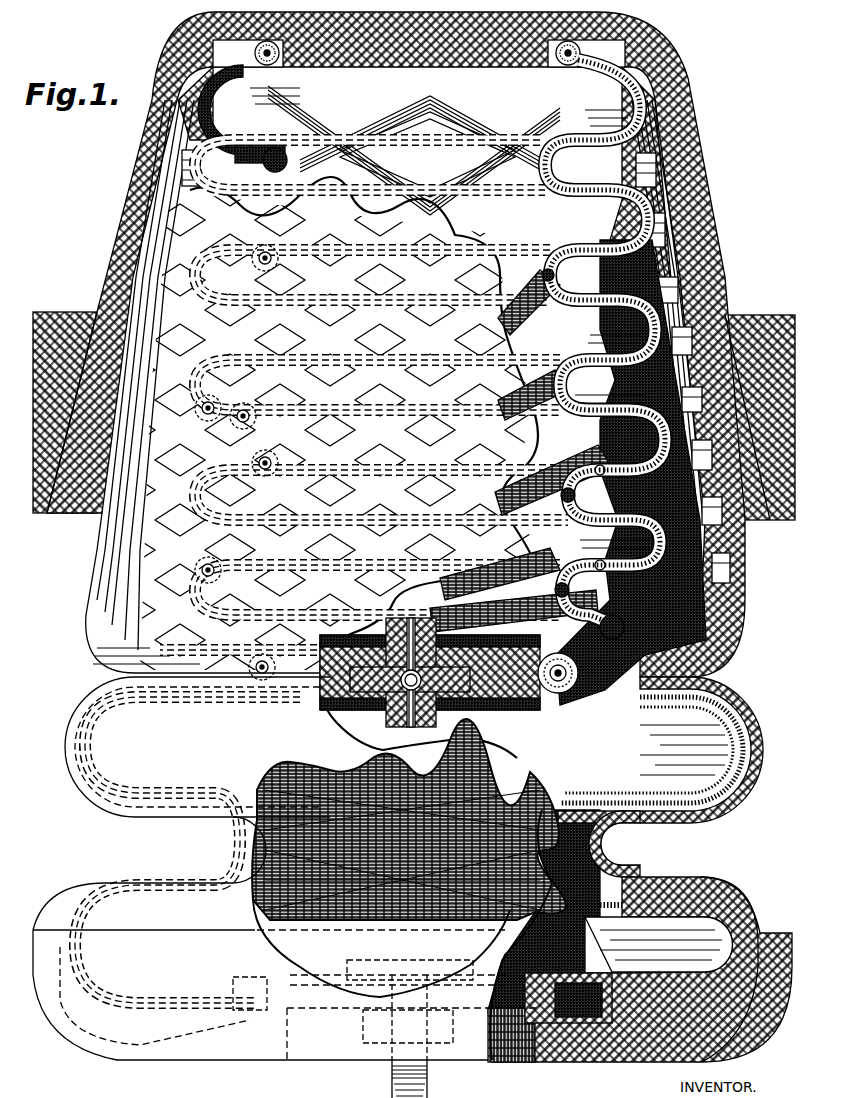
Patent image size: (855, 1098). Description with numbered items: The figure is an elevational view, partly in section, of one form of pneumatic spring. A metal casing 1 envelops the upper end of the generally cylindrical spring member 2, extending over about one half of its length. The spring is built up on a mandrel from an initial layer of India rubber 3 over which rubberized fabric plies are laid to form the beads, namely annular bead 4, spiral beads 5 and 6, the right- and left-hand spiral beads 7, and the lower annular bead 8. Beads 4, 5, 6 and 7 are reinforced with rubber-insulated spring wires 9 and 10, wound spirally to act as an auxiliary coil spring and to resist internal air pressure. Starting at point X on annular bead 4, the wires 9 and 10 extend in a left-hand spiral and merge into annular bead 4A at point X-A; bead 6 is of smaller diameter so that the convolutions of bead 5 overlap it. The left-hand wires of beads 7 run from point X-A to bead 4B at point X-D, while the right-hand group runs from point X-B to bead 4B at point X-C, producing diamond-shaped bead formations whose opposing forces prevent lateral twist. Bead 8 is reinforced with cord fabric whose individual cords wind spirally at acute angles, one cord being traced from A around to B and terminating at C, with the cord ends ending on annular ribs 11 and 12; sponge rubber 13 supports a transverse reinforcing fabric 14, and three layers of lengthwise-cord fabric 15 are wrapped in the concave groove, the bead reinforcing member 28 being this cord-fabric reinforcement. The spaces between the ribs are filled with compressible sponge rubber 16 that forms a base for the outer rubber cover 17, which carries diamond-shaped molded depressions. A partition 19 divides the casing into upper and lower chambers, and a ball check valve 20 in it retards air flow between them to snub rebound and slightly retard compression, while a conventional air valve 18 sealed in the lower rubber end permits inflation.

The metal casing 1 is at (712, 214).
The spring member 2 is at (744, 630).
The layer of rubber 3 is at (712, 272).
The annular bead 4 is at (552, 700).
The annular bead 4A is at (372, 360).
The annular bead 4B is at (249, 118).
The spiral bead 5 is at (612, 640).
The spiral bead 6 is at (545, 570).
The spiral beads 7 is at (556, 142).
The annular bead 8 is at (232, 875).
The reinforcing spring wire 9 is at (610, 470).
The reinforcing wire 10 is at (610, 468).
The annular rib 11 is at (762, 755).
The annular rib 12 is at (752, 935).
The sponge rubber 13 is at (567, 915).
The transverse reinforcing fabric 14 is at (590, 808).
The reinforcing fabric layers 15 is at (205, 862).
The sponge rubber 16 is at (722, 528).
The outer rubber cover 17 is at (665, 195).
The air-valve 18 is at (382, 1080).
The partition 19 is at (508, 688).
The ball check-valve 20 is at (395, 718).
The bead reinforcing member 28 is at (113, 825).
The cord starting point A is at (105, 780).
The cord intermediate point B is at (625, 853).
The cord terminating point C is at (85, 910).
The starting point on bead 4 X is at (270, 690).
The merging point on bead 4A X-A is at (600, 305).
The starting point of right-hand wires X-B is at (265, 385).
The merging point on bead 4B X-C is at (582, 50).
The merging point on bead 4B X-D is at (213, 50).